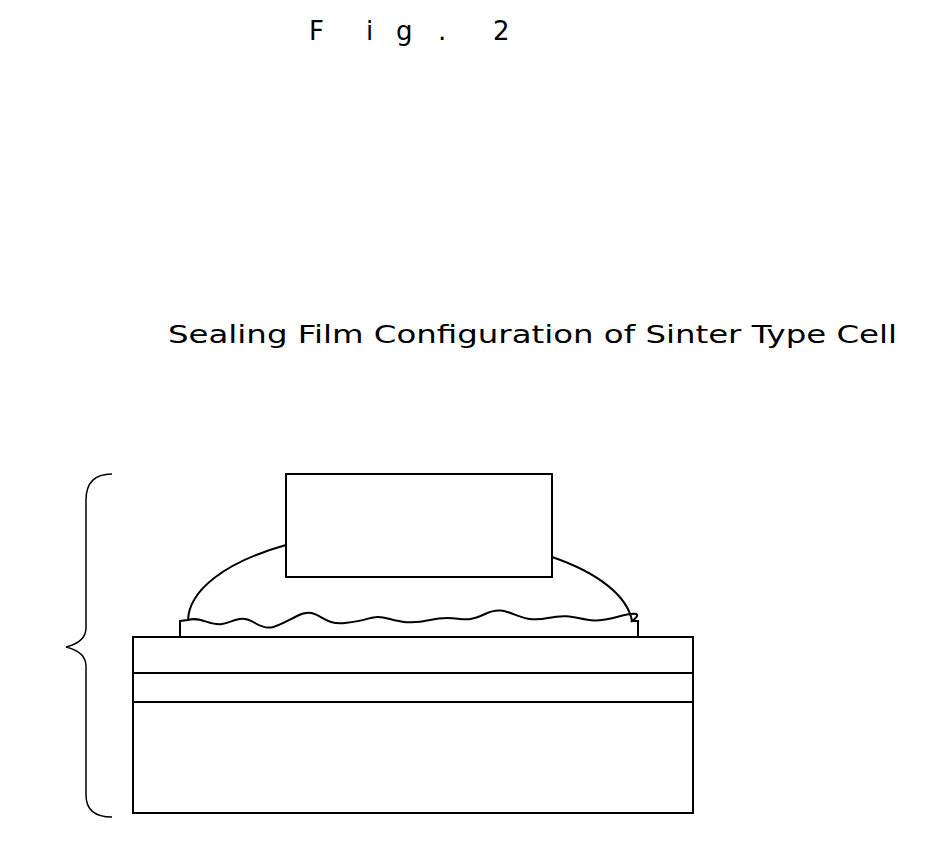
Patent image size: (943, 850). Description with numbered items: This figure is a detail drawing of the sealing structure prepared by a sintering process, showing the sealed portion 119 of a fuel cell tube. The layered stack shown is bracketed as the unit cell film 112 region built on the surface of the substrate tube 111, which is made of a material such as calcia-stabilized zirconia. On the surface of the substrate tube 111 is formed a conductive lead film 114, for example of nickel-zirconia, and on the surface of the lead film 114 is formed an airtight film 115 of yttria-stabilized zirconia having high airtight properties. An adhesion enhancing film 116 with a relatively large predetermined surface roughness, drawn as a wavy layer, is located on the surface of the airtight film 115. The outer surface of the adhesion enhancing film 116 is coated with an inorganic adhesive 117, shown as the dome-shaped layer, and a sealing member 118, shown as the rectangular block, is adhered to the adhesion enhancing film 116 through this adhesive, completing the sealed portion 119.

The substrate tube 111 is at (693, 763).
The unit cell film 112 is at (66, 645).
The conductive lead film 114 is at (693, 691).
The airtight film 115 is at (693, 657).
The adhesion enhancing film 116 is at (630, 630).
The inorganic adhesive 117 is at (587, 575).
The sealing member 118 is at (532, 475).
The sealed portion 119 is at (255, 483).